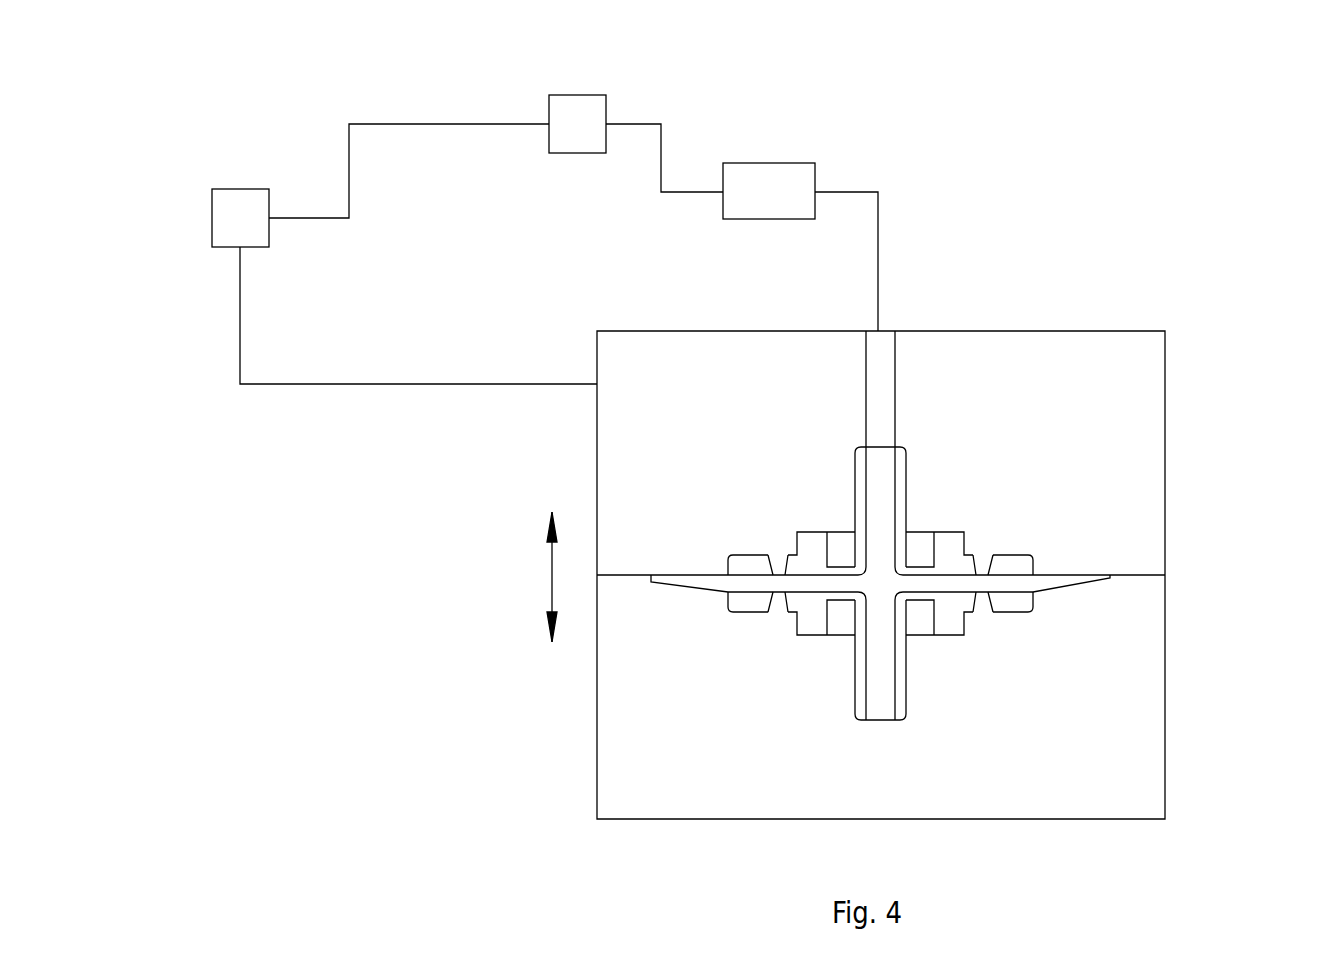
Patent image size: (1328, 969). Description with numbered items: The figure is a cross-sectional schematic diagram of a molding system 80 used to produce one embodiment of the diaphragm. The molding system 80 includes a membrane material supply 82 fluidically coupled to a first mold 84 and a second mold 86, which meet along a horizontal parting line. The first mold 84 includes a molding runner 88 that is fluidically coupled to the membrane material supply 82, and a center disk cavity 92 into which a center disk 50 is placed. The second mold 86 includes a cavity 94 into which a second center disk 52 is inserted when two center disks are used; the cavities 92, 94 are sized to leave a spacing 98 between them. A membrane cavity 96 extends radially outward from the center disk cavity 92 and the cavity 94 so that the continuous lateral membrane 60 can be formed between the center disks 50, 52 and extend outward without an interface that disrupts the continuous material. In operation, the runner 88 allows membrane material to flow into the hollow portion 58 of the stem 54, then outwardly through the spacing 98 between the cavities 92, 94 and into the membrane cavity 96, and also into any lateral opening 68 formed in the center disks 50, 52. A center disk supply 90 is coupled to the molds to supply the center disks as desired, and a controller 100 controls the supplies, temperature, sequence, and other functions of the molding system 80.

The center disk 50 is at (1012, 557).
The second center disk 52 is at (998, 603).
The stem 54 is at (905, 445).
The hollow portion 58 is at (877, 455).
The continuous lateral membrane 60 is at (880, 578).
The lateral opening 68 is at (775, 605).
The molding system 80 is at (1196, 292).
The membrane material supply 82 is at (792, 162).
The first mold 84 is at (1167, 513).
The second mold 86 is at (1167, 640).
The molding runner 88 is at (867, 330).
The center disk supply 90 is at (240, 187).
The center disk cavity 92 is at (910, 478).
The cavity 94 is at (1018, 613).
The membrane cavity 96 is at (697, 588).
The spacing 98 is at (808, 585).
The controller 100 is at (595, 95).